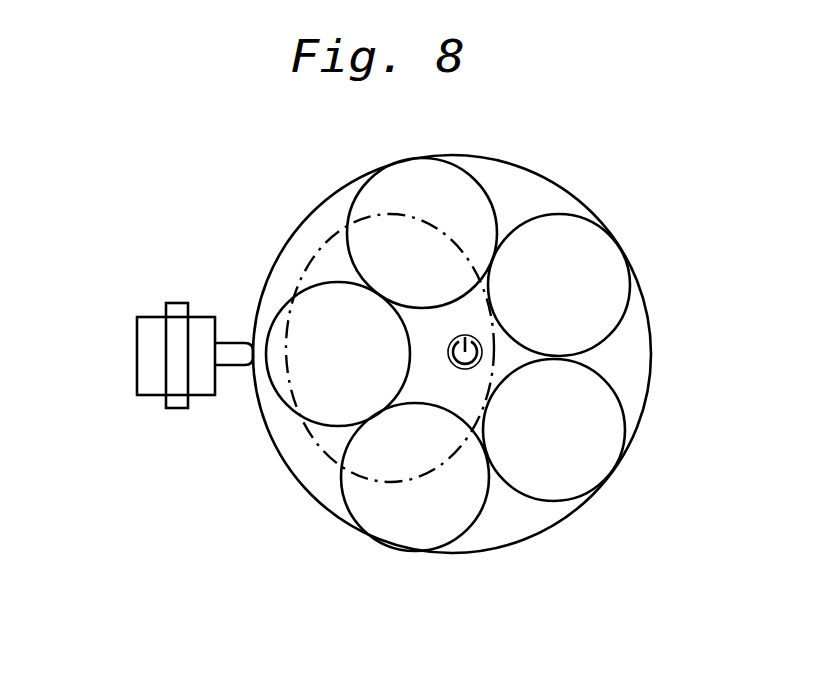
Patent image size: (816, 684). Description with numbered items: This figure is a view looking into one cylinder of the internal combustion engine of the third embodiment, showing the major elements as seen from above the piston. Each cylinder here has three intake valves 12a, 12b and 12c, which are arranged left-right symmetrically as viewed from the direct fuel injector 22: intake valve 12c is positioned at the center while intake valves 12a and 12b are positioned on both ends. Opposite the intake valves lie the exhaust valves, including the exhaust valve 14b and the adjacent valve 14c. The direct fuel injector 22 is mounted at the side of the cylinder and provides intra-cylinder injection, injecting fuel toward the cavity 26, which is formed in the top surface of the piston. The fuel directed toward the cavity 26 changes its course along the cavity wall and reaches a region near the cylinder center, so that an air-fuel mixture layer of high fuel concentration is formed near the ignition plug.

The intake valve 12a is at (394, 533).
The intake valve 12b is at (372, 212).
The intake valve 12c is at (280, 397).
The exhaust valve 14b is at (593, 258).
The light source (illumination unit) 14c is at (595, 450).
The direct fuel injector 22 is at (137, 362).
The cavity 26 is at (310, 267).